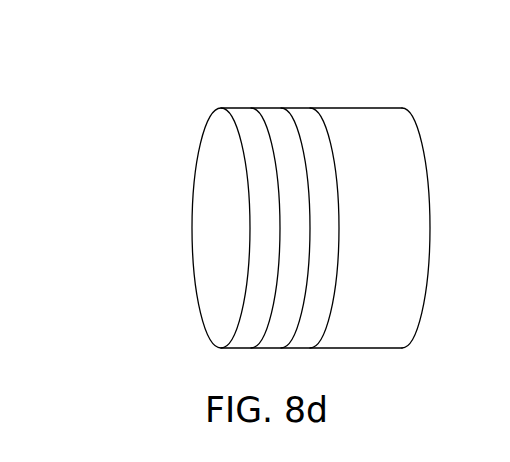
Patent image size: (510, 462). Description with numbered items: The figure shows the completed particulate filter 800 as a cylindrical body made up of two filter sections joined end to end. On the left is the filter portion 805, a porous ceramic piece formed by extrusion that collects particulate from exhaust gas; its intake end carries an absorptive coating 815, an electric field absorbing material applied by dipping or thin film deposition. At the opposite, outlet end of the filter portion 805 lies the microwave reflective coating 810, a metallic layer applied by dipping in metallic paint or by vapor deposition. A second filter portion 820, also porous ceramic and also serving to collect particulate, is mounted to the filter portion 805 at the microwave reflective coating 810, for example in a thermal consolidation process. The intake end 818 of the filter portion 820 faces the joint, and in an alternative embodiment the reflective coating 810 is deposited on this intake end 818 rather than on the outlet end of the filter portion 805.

The particulate filter 800 is at (122, 82).
The filter portion 805 is at (263, 107).
The microwave reflective coating 810 is at (292, 107).
The absorptive coating 815 is at (233, 107).
The intake end 818 is at (305, 107).
The filter portion 820 is at (370, 107).